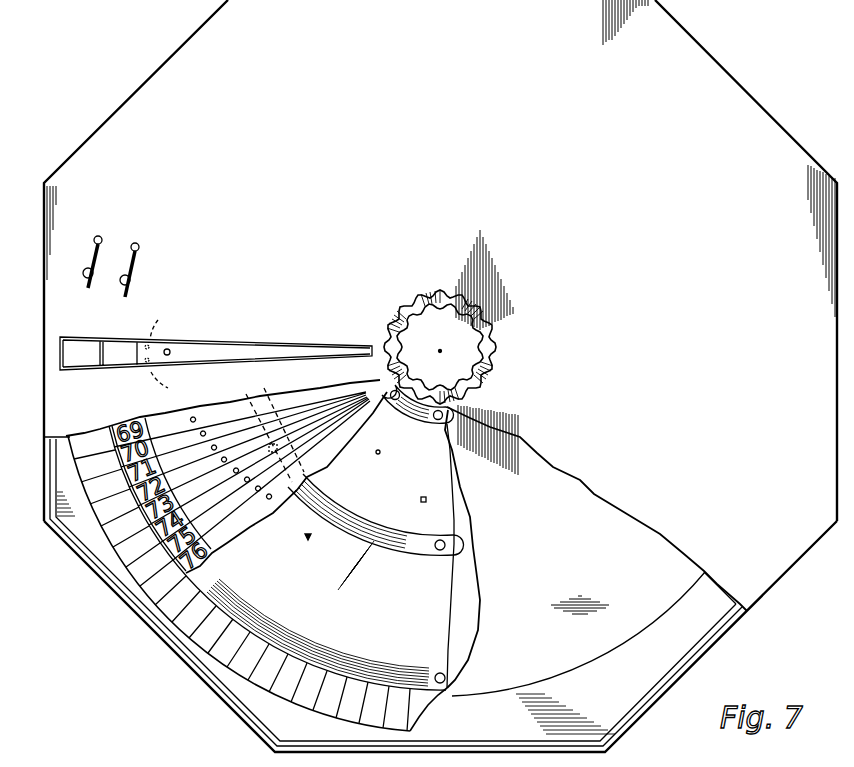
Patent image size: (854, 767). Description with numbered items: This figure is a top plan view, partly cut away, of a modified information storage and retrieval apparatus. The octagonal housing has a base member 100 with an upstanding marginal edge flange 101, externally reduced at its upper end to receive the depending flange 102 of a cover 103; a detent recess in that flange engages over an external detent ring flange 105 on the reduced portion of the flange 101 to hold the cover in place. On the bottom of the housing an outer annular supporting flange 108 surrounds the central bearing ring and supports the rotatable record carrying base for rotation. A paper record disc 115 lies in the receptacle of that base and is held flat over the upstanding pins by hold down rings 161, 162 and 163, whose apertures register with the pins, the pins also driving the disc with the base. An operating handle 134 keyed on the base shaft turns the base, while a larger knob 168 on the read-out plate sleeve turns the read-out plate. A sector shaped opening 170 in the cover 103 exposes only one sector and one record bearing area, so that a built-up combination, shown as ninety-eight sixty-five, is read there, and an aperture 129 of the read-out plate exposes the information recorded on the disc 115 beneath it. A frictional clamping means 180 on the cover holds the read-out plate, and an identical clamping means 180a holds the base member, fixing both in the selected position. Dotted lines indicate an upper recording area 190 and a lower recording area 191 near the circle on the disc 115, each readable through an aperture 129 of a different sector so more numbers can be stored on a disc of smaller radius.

The housing base member 100 is at (440, 378).
The upstanding marginal edge flange 101 is at (627, 731).
The depending flange 102 is at (677, 663).
The cover 103 is at (202, 82).
The detent ring flange 105 is at (717, 625).
The outer annular supporting flange 108 is at (574, 671).
The record disc 115 is at (413, 582).
The aperture 129 is at (170, 354).
The operating handle 134 is at (467, 350).
The hold down ring 161 is at (268, 629).
The hold down ring 162 is at (363, 527).
The hold down ring 163 is at (405, 434).
The knob 168 is at (482, 340).
The sector shaped opening 170 is at (257, 347).
The frictional clamping means 180 is at (147, 270).
The clamping means 180a is at (115, 236).
The upper dotted area 190 is at (160, 321).
The lower dotted area 191 is at (170, 385).